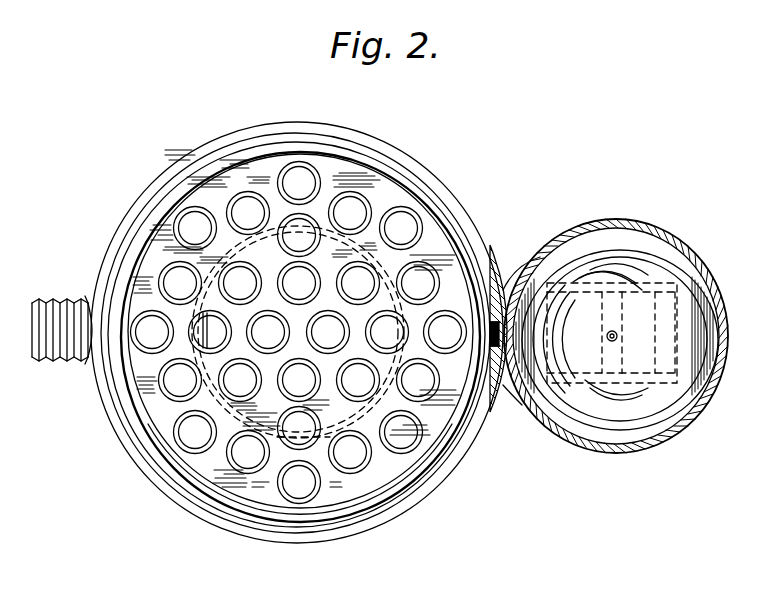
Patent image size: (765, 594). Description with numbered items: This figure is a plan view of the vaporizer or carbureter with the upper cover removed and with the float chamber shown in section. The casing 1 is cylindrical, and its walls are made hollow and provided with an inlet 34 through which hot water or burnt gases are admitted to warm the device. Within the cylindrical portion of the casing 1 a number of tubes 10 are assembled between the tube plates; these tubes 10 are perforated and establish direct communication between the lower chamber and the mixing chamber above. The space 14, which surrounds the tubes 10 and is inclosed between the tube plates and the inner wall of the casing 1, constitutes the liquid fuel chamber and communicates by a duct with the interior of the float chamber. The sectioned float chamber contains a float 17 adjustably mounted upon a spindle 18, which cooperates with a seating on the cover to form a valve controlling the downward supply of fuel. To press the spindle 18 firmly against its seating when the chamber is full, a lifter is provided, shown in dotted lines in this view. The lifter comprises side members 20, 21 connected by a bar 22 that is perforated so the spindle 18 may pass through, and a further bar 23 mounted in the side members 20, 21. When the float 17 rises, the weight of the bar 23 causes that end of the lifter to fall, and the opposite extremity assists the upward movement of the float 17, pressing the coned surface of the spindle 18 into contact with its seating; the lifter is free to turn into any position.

The casing 1 is at (222, 140).
The tubes 10 is at (433, 268).
The space 14 is at (385, 192).
The float 17 is at (630, 250).
The spindle 18 is at (607, 341).
The side member 20 is at (603, 257).
The side member 21 is at (595, 388).
The bar 22 is at (600, 330).
The bar 23 is at (655, 367).
The inlet 34 is at (66, 362).